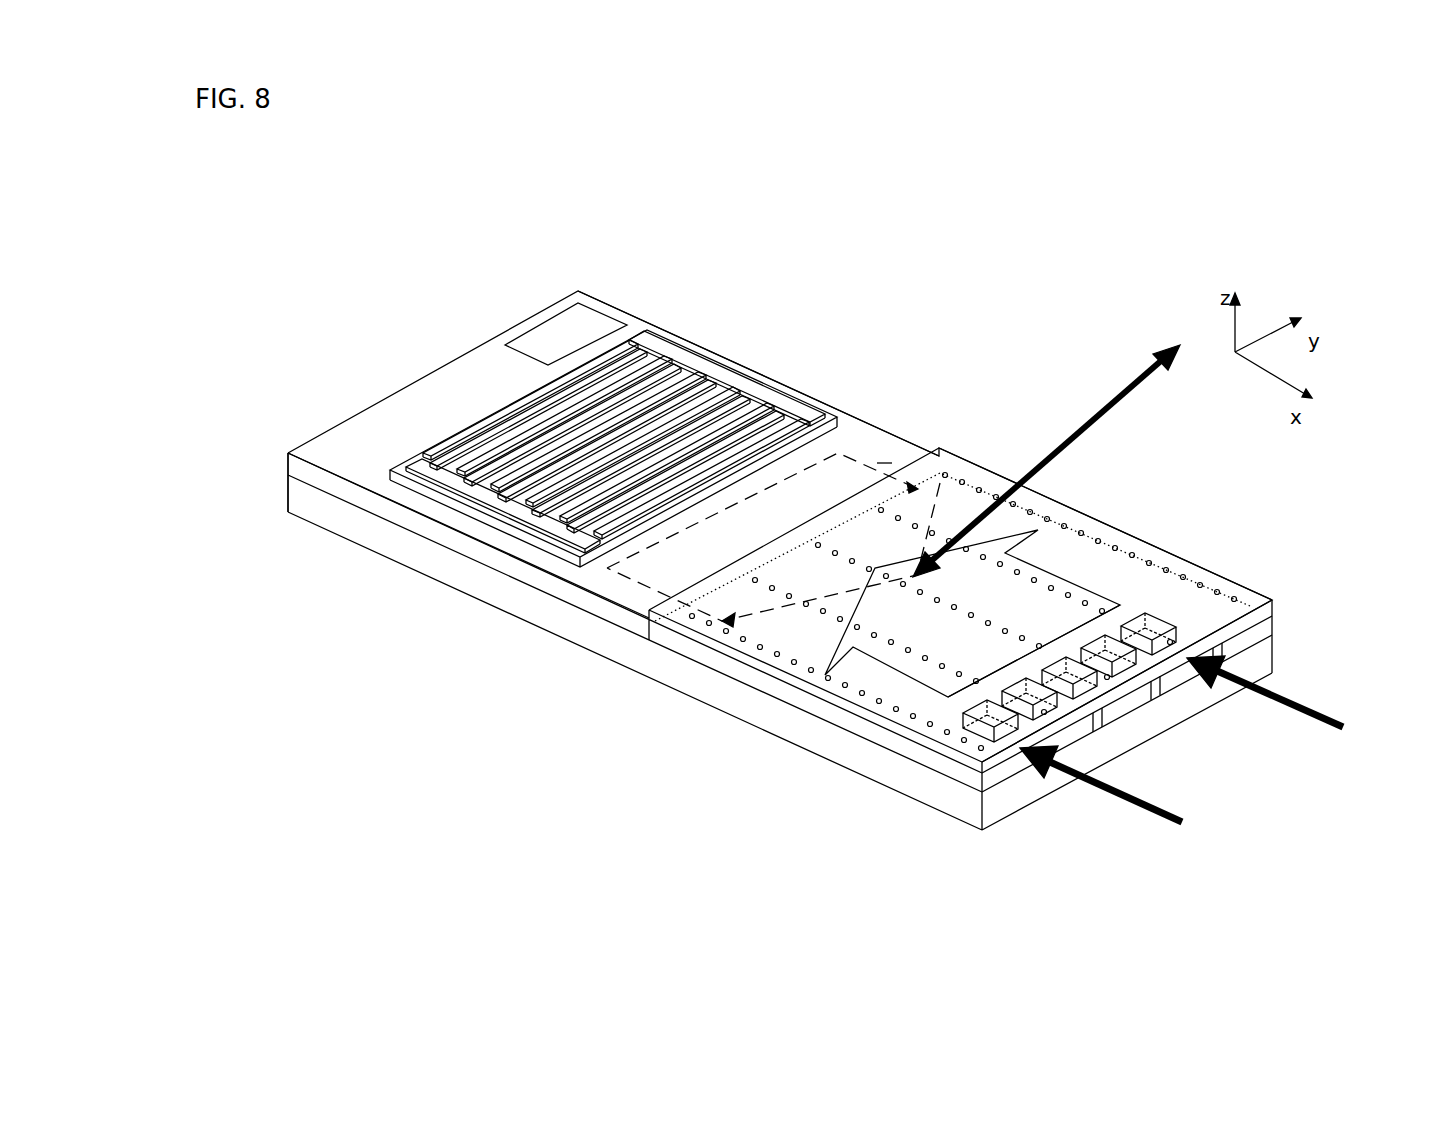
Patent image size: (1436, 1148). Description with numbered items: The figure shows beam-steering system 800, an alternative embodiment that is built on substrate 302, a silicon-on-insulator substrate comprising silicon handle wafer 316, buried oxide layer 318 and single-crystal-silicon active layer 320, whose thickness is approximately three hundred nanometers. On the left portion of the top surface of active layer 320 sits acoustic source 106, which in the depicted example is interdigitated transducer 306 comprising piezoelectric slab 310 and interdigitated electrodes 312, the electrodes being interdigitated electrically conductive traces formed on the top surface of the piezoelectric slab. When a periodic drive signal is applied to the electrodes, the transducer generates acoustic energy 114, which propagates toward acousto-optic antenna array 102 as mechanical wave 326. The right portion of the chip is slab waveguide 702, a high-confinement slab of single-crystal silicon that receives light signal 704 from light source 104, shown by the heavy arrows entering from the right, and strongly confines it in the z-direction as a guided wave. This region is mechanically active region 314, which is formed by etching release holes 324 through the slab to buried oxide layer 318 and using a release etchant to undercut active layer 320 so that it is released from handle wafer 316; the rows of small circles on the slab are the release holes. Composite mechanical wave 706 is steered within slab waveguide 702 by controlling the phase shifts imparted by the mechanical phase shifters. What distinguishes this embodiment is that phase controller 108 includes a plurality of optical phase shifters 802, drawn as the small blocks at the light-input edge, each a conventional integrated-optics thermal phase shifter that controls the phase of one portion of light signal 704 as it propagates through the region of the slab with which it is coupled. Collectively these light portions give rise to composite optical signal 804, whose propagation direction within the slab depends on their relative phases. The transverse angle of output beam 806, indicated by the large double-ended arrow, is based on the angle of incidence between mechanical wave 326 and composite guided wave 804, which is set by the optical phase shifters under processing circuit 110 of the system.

The beam-steering system 800 is at (272, 245).
The acousto-optic antenna array 102 is at (1058, 500).
The light source 104 is at (1357, 717).
The acoustic source 106 is at (690, 318).
The phase controller 108 is at (1172, 612).
The processing circuit 110 is at (567, 338).
The acoustic energy 114 is at (858, 408).
The substrate 302 is at (272, 458).
The interdigitated transducer 306 is at (762, 366).
The piezoelectric slab 310 is at (398, 468).
The interdigitated electrodes 312 is at (508, 405).
The mechanically active region 314 is at (1226, 540).
The silicon handle wafer 316 is at (418, 553).
The buried oxide layer 318 is at (382, 508).
The active layer 320 is at (312, 440).
The release holes 324 is at (702, 637).
The mechanical wave 326 is at (878, 463).
The slab waveguide 702 is at (857, 718).
The light signal 704 is at (1125, 770).
The composite mechanical wave 706 is at (815, 650).
The optical phase shifters 802 is at (990, 665).
The composite optical signal 804 is at (1078, 560).
The output beam 806 is at (1050, 450).